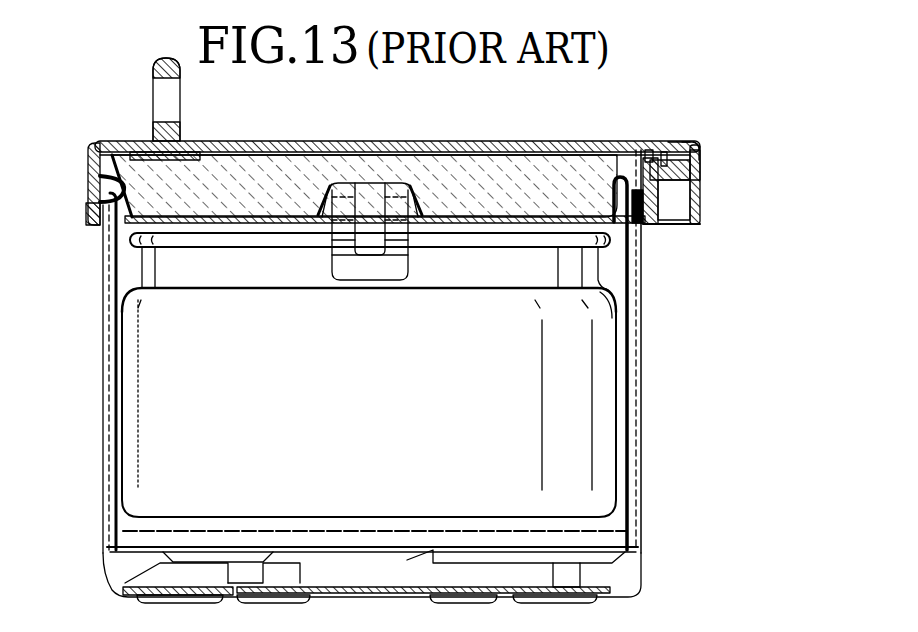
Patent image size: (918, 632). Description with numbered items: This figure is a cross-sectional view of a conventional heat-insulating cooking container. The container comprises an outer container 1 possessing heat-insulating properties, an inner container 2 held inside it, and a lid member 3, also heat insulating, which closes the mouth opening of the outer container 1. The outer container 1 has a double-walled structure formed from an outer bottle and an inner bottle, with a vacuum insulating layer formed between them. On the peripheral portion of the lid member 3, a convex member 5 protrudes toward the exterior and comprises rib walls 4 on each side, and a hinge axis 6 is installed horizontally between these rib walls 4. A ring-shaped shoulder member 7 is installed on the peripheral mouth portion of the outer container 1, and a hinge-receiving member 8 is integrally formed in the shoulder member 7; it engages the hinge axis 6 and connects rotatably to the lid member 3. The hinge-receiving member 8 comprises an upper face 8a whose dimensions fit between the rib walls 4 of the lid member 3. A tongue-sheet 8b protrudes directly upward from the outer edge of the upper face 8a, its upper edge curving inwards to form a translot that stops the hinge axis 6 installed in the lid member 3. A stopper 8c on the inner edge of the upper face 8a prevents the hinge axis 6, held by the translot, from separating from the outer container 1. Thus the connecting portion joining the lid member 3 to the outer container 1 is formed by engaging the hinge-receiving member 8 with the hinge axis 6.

The outer container 1 is at (650, 364).
The inner container 2 is at (618, 285).
The lid member 3 is at (463, 138).
The rib wall 4 is at (693, 147).
The convex member 5 is at (686, 120).
The hinge axis 6 is at (702, 171).
The shoulder member 7 is at (92, 218).
The hinge-receiving member 8 is at (706, 221).
The upper face 8a is at (666, 152).
The tongue-sheet 8b is at (702, 162).
The stopper 8c is at (652, 150).